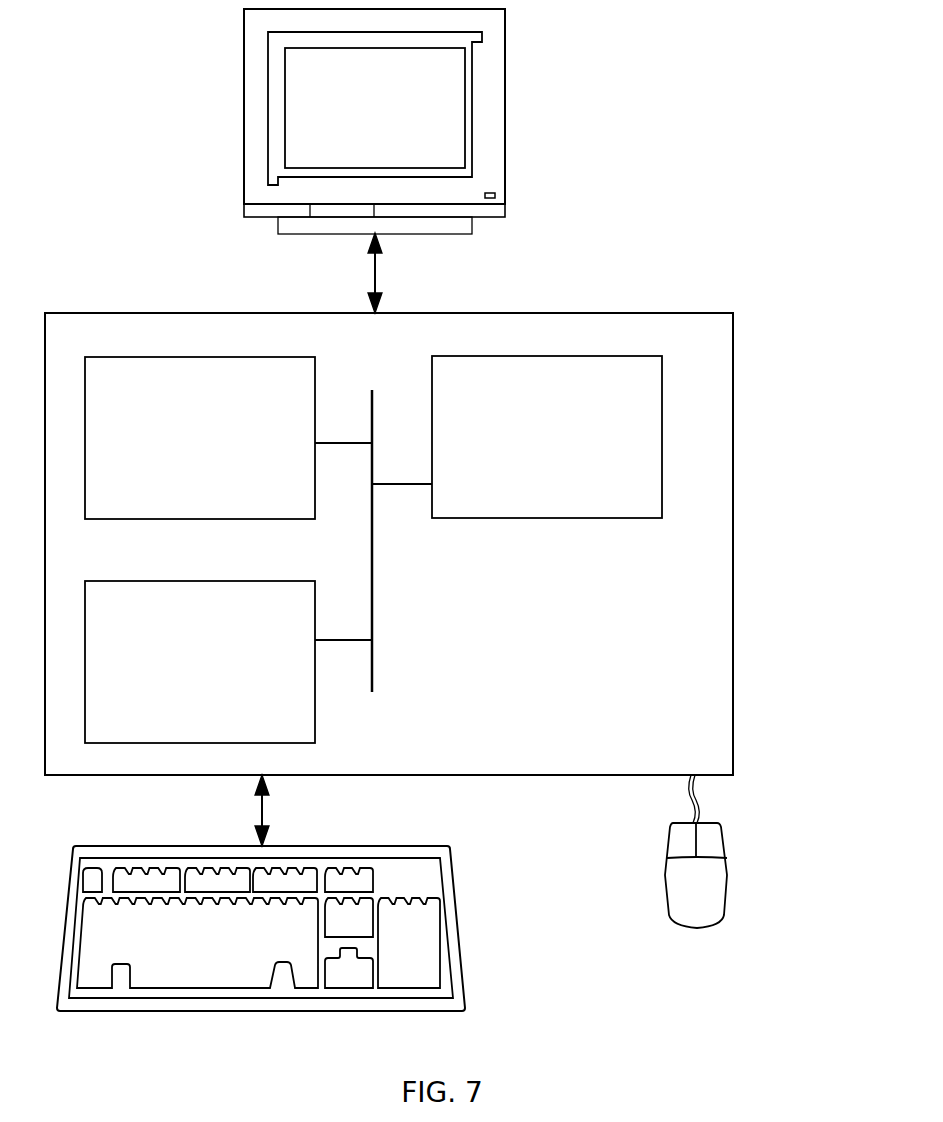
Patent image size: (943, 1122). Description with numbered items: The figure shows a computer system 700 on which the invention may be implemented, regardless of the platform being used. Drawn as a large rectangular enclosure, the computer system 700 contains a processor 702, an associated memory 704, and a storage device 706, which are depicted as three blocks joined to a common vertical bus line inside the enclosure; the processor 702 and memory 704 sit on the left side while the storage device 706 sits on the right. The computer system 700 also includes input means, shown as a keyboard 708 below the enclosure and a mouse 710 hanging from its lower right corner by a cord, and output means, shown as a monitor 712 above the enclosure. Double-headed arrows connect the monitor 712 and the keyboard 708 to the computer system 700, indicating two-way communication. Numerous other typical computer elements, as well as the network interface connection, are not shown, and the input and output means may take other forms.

The computer system 700 is at (757, 162).
The processor 702 is at (182, 450).
The memory 704 is at (182, 674).
The storage device 706 is at (527, 450).
The keyboard 708 is at (200, 954).
The mouse 710 is at (740, 845).
The monitor 712 is at (357, 124).